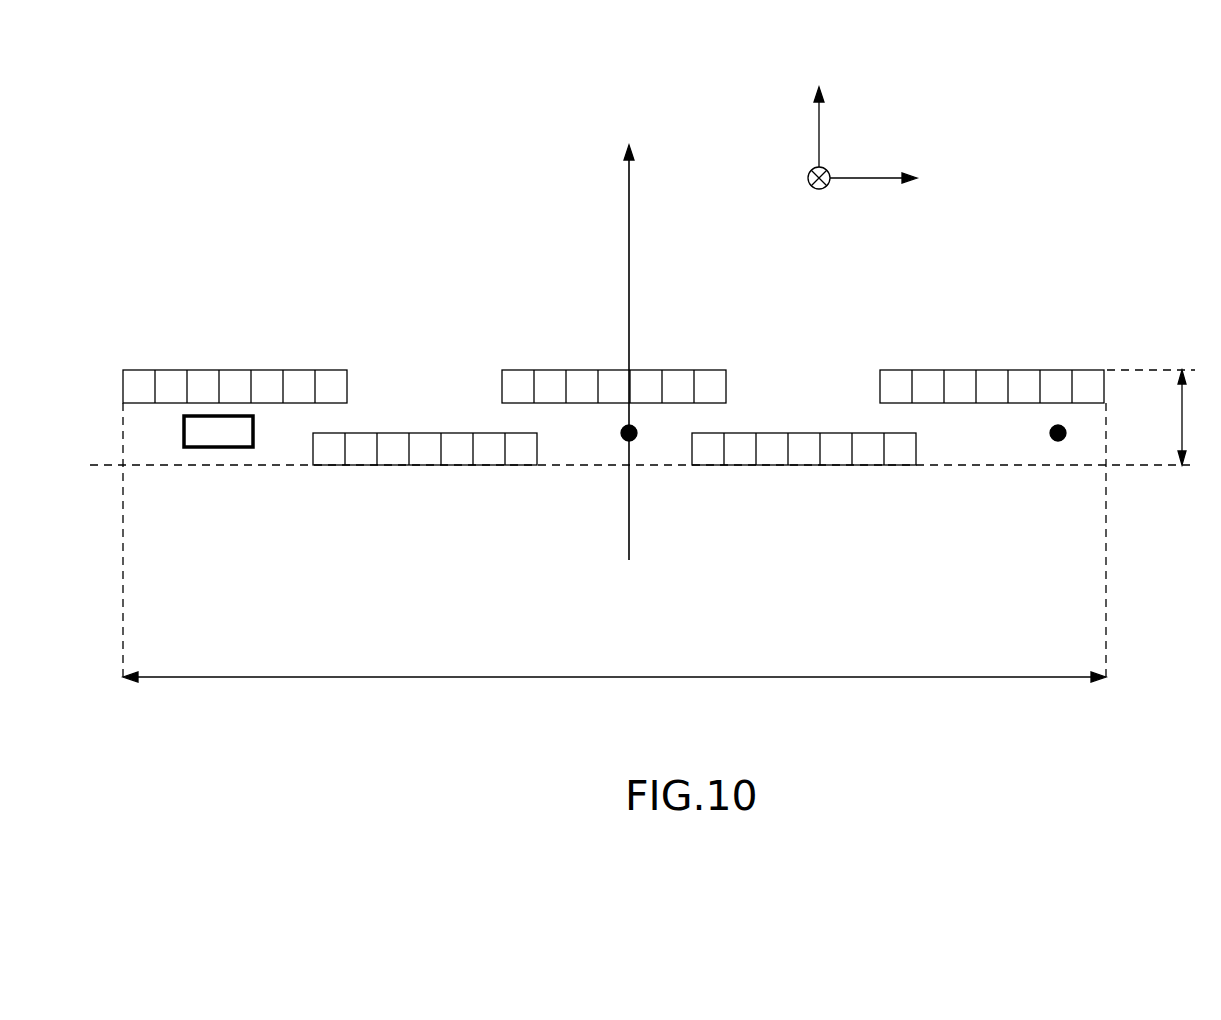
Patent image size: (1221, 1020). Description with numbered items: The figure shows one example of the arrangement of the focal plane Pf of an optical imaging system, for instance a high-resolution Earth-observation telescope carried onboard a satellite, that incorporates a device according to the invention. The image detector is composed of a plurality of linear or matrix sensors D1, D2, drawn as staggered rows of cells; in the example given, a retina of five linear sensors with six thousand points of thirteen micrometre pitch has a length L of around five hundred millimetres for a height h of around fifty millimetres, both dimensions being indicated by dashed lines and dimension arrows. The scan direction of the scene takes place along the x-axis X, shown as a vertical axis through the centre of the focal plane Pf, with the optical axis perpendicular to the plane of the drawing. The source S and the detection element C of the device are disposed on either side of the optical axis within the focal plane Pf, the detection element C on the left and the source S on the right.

The linear sensor D1 is at (230, 369).
The linear sensor D2 is at (396, 433).
The detection element C is at (217, 448).
The source S is at (1058, 441).
The x-axis X is at (629, 228).
The focal plane Pf is at (863, 143).
The height h is at (1193, 417).
The length L is at (614, 663).